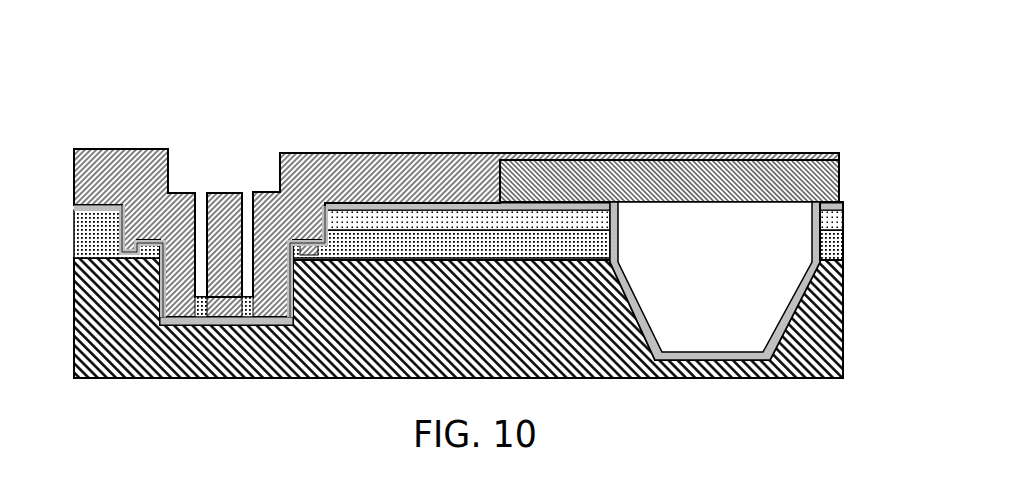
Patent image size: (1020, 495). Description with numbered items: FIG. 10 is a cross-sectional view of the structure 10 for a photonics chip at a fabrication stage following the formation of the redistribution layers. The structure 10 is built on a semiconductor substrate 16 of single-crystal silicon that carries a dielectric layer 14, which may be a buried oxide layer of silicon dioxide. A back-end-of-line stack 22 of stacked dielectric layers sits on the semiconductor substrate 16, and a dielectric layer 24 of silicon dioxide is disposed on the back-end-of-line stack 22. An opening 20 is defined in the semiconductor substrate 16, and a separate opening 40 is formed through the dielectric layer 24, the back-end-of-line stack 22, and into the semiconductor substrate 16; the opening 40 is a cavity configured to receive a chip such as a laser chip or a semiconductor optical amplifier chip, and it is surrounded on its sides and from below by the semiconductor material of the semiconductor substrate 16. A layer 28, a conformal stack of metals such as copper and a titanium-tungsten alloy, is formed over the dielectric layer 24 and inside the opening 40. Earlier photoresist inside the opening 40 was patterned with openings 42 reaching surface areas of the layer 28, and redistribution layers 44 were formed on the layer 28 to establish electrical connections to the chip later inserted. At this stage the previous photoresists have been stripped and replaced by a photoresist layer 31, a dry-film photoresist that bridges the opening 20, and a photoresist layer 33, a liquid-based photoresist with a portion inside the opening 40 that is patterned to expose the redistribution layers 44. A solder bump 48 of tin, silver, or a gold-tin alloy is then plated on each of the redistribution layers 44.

The structure 10 is at (88, 68).
The dielectric layer 14 is at (830, 257).
The semiconductor substrate 16 is at (830, 328).
The opening 20 is at (725, 305).
The back-end-of-line stack 22 is at (100, 238).
The dielectric layer 24 is at (445, 222).
The layer 28 is at (387, 208).
The photoresist layer 31 is at (657, 175).
The photoresist layer 33 is at (125, 180).
The opening 40 is at (226, 157).
The openings 42 is at (202, 215).
The redistribution layers 44 is at (193, 312).
The solder bump 48 is at (200, 304).